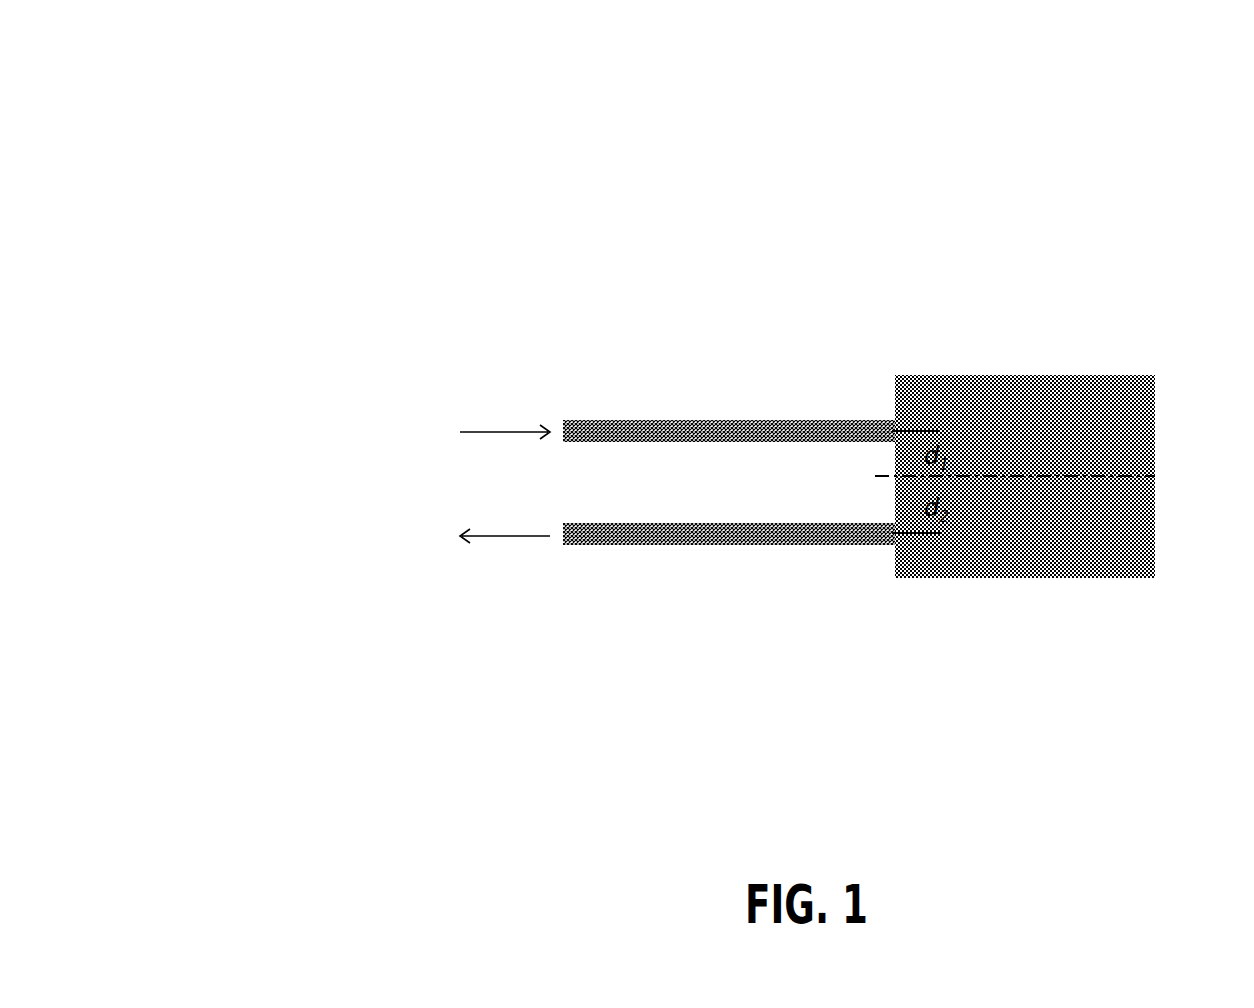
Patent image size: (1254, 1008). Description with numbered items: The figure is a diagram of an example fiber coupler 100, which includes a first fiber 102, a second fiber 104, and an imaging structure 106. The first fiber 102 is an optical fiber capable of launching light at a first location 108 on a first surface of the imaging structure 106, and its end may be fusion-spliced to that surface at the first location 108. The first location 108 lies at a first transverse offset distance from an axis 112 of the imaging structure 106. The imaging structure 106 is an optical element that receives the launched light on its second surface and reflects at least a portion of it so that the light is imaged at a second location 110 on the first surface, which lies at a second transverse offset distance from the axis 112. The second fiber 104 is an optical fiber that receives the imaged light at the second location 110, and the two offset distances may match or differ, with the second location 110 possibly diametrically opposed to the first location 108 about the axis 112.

The fiber coupler 100 is at (280, 24).
The first fiber 102 is at (672, 424).
The second fiber 104 is at (668, 539).
The imaging structure 106 is at (1025, 476).
The first location 108 is at (893, 431).
The second location 110 is at (893, 533).
The axis 112 is at (1158, 476).